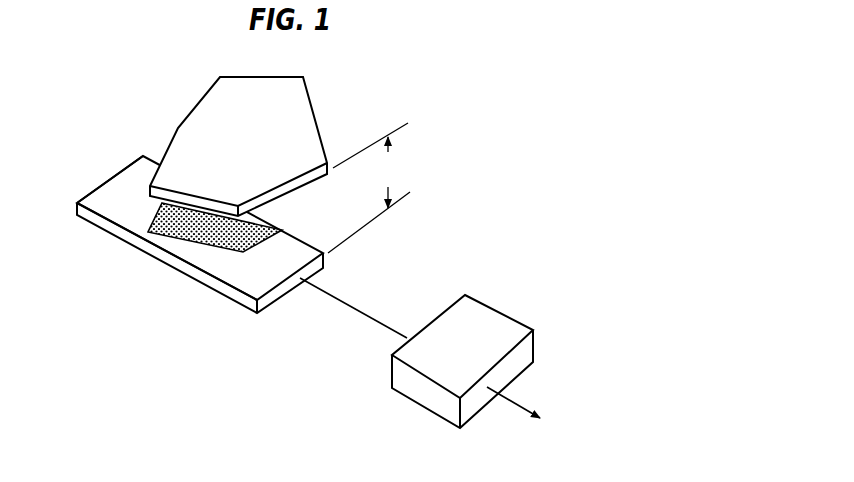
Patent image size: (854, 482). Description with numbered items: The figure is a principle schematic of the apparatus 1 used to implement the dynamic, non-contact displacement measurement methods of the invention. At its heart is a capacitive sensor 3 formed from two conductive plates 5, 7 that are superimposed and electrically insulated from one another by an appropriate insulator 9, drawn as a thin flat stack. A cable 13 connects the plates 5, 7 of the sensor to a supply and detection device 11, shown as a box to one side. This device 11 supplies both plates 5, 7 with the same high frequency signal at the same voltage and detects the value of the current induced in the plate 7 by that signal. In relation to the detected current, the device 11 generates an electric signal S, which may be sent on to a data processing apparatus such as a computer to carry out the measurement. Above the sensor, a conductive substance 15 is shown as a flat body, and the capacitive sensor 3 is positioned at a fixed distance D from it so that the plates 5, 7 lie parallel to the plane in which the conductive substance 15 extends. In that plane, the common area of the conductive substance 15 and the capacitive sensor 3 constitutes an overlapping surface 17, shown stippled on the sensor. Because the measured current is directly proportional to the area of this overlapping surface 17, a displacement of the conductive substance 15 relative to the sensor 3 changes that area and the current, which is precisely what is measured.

The apparatus 1 is at (354, 265).
The capacitive sensor 3 is at (228, 268).
The plate 5 is at (110, 228).
The plate 7 is at (85, 203).
The insulator 9 is at (77, 215).
The supply and detection device 11 is at (417, 357).
The cable 13 is at (350, 313).
The conductive substance 15 is at (260, 102).
The overlapping surface 17 is at (172, 222).
The fixed distance D is at (369, 188).
The electric signal S is at (527, 412).